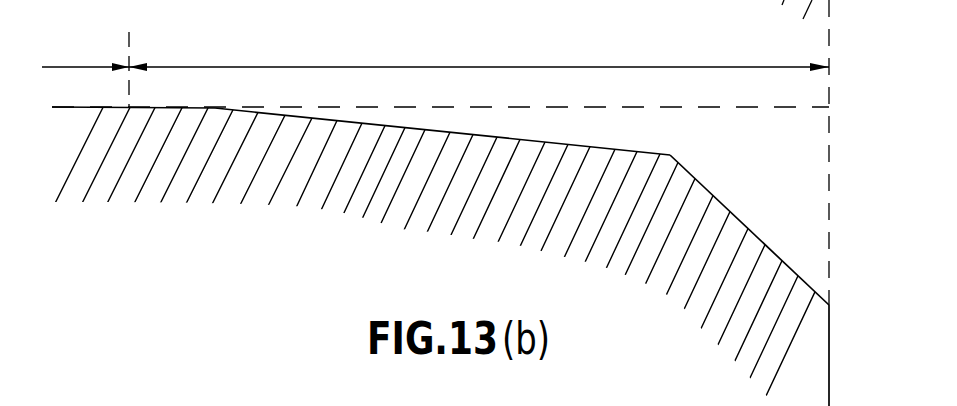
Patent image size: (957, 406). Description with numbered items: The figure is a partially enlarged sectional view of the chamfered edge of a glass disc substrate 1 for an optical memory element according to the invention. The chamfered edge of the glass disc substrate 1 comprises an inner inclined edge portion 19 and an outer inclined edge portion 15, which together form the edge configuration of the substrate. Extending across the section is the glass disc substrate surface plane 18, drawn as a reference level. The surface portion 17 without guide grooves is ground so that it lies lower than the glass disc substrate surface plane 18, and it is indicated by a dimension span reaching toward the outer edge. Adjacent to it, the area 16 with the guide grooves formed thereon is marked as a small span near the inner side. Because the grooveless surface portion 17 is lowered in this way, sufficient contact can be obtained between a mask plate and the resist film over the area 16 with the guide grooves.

The glass disc substrate 1 is at (812, 374).
The outer inclined edge portion 15 is at (793, 270).
The area with guide grooves formed thereon 16 is at (74, 68).
The surface portion without guide grooves 17 is at (465, 67).
The glass disc substrate surface plane 18 is at (782, 108).
The inner inclined edge portion 19 is at (536, 146).